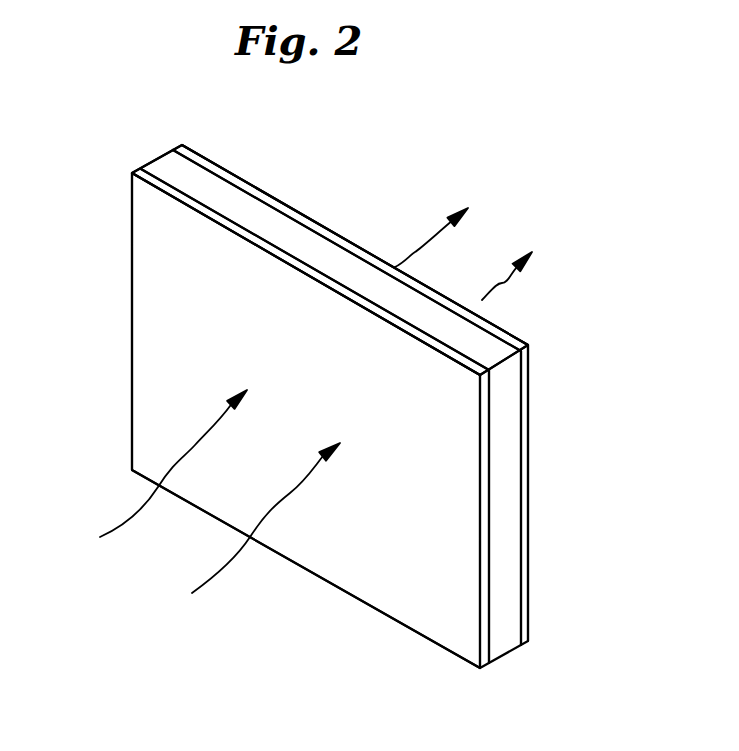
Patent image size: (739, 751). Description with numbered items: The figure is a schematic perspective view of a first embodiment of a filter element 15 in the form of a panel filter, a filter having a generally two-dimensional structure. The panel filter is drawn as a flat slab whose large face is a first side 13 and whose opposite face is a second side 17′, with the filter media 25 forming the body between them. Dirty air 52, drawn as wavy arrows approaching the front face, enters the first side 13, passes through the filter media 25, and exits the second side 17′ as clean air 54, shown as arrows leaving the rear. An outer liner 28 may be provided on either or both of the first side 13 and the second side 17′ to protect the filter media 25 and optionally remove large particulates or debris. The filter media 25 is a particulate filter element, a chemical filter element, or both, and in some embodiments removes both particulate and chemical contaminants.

The filter element 15 is at (390, 180).
The filter media 25 is at (165, 160).
The first side 13 is at (452, 630).
The outer liner 28 is at (490, 628).
The second side 17′ is at (530, 533).
The dirty air 52 is at (195, 445).
The clean air 54 is at (502, 283).